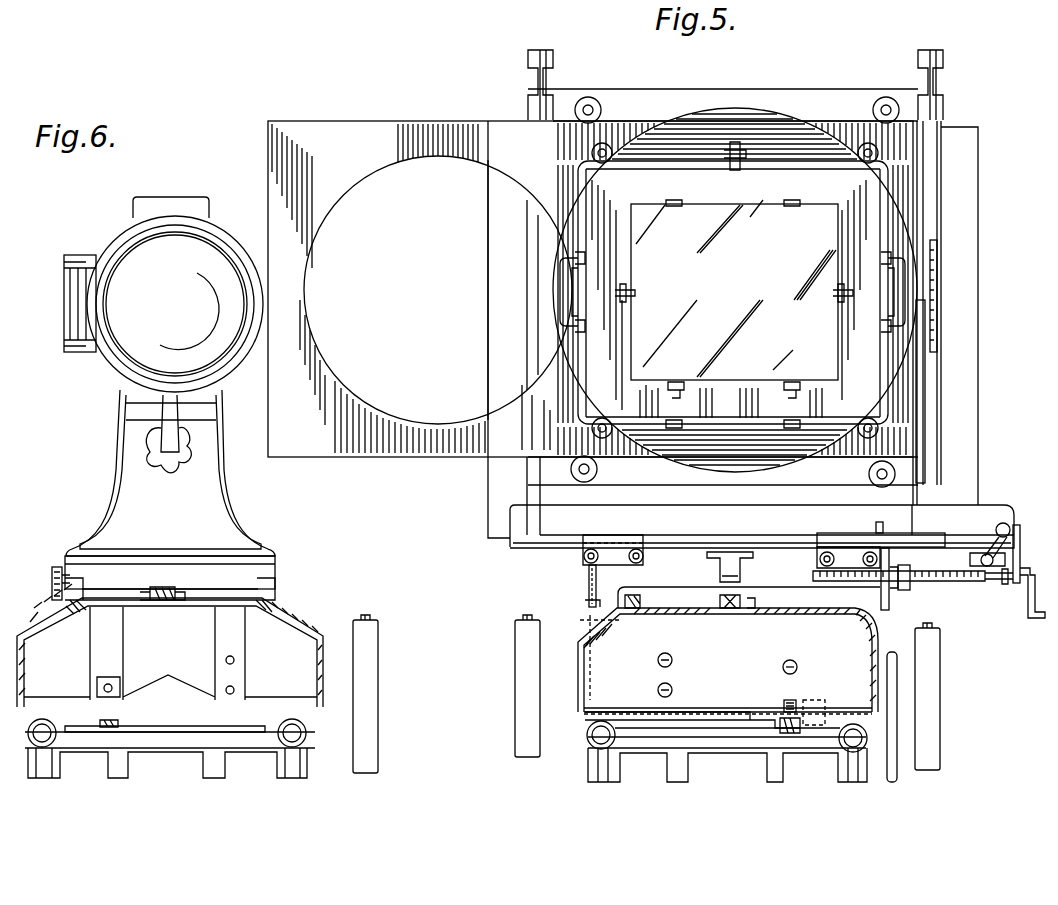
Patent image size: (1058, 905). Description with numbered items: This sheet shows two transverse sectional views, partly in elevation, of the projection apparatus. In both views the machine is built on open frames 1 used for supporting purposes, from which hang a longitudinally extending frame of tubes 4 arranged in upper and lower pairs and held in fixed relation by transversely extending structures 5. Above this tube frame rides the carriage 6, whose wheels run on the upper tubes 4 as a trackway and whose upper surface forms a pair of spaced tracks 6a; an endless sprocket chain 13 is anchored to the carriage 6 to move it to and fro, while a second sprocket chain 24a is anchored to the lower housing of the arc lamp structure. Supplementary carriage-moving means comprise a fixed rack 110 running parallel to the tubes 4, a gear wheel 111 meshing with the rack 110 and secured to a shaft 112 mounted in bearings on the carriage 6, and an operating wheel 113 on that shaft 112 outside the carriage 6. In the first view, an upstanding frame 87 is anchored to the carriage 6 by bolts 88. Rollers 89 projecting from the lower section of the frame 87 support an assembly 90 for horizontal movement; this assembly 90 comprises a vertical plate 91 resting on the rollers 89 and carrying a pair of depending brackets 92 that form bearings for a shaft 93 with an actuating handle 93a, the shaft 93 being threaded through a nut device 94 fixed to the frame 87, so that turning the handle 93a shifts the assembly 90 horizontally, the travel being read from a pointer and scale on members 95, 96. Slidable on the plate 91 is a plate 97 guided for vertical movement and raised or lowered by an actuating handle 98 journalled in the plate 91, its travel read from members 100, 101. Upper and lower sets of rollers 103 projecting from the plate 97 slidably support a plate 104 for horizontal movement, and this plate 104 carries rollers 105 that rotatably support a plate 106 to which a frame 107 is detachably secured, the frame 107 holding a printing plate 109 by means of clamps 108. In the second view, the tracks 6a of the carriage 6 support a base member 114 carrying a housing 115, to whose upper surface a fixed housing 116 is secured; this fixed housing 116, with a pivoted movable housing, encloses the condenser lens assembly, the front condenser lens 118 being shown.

In FIG. 6, the open frame 1 is at (373, 658).
In FIG. 5, the open frame 1 is at (515, 646).
In FIG. 6, the tube 4 is at (47, 726).
In FIG. 5, the tube 4 is at (587, 735).
In FIG. 6, the transversely extending structure 5 is at (283, 760).
In FIG. 5, the transversely extending structure 5 is at (615, 762).
In FIG. 6, the carriage 6 is at (308, 632).
In FIG. 5, the carriage 6 is at (578, 650).
In FIG. 6, the track 6a is at (78, 600).
In FIG. 6, the endless sprocket chain 13 is at (115, 690).
In FIG. 5, the endless sprocket chain 13 is at (792, 660).
In FIG. 6, the sprocket chain 24a is at (236, 690).
In FIG. 5, the sprocket chain 24a is at (672, 690).
In FIG. 5, the upstanding frame 87 is at (580, 563).
In FIG. 5, the bolt 88 is at (588, 592).
In FIG. 5, the roller 89 is at (608, 562).
In FIG. 5, the assembly 90 is at (1012, 508).
In FIG. 5, the vertical plate 91 is at (958, 514).
In FIG. 5, the depending bracket 92 is at (1020, 560).
In FIG. 5, the shaft 93 is at (962, 584).
In FIG. 5, the actuating handle 93a is at (1030, 600).
In FIG. 5, the internally threaded nut device 94 is at (898, 588).
In FIG. 5, the pointer member 95 is at (875, 526).
In FIG. 5, the scale member 96 is at (818, 536).
In FIG. 5, the plate 97 is at (768, 100).
In FIG. 5, the actuating handle 98 is at (998, 540).
In FIG. 5, the pointer member 100 is at (921, 300).
In FIG. 5, the scale member 101 is at (938, 272).
In FIG. 5, the roller 103 is at (590, 98).
In FIG. 5, the plate 104 is at (480, 455).
In FIG. 5, the roller 105 is at (605, 142).
In FIG. 5, the plate 106 is at (690, 125).
In FIG. 5, the frame 107 is at (576, 343).
In FIG. 5, the clamp 108 is at (840, 298).
In FIG. 5, the printing plate 109 is at (752, 212).
In FIG. 6, the fixed rack 110 is at (118, 722).
In FIG. 5, the fixed rack 110 is at (795, 735).
In FIG. 5, the gear wheel 111 is at (784, 700).
In FIG. 5, the shaft 112 is at (825, 712).
In FIG. 5, the operating wheel 113 is at (897, 672).
In FIG. 6, the base member 114 is at (232, 575).
In FIG. 6, the housing 115 is at (215, 482).
In FIG. 6, the fixed housing 116 is at (108, 362).
In FIG. 6, the front condenser lens 118 is at (135, 255).